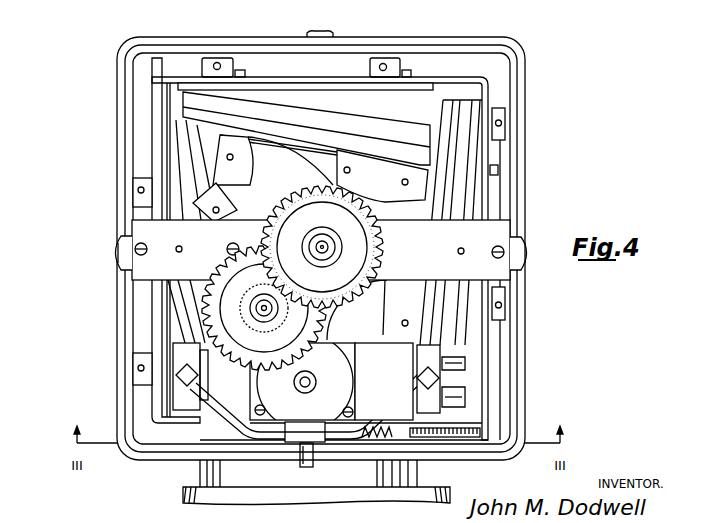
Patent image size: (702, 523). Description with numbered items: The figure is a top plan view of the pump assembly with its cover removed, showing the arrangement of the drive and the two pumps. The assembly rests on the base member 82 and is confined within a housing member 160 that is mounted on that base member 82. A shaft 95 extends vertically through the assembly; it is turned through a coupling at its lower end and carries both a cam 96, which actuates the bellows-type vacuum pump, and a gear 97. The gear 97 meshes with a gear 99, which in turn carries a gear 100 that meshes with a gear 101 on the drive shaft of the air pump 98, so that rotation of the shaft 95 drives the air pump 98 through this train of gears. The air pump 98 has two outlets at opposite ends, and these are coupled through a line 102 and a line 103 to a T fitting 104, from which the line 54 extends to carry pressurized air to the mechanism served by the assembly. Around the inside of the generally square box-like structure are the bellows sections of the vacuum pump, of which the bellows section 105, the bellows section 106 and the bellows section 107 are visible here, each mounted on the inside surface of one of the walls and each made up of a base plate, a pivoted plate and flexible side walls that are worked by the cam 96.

The base member 82 is at (524, 82).
The housing member 160 is at (518, 104).
The bellows section 106 is at (401, 113).
The bellows section 105 is at (162, 187).
The cam 96 is at (388, 186).
The shaft 95 is at (330, 249).
The gear 97 is at (362, 268).
The gear 99 is at (243, 312).
The gear 100 is at (232, 326).
The gear 101 is at (282, 373).
The line 102 is at (237, 427).
The line 103 is at (372, 430).
The T fitting 104 is at (318, 441).
The line 54 is at (300, 462).
The air pump 98 is at (437, 377).
The bellows section 107 is at (474, 332).